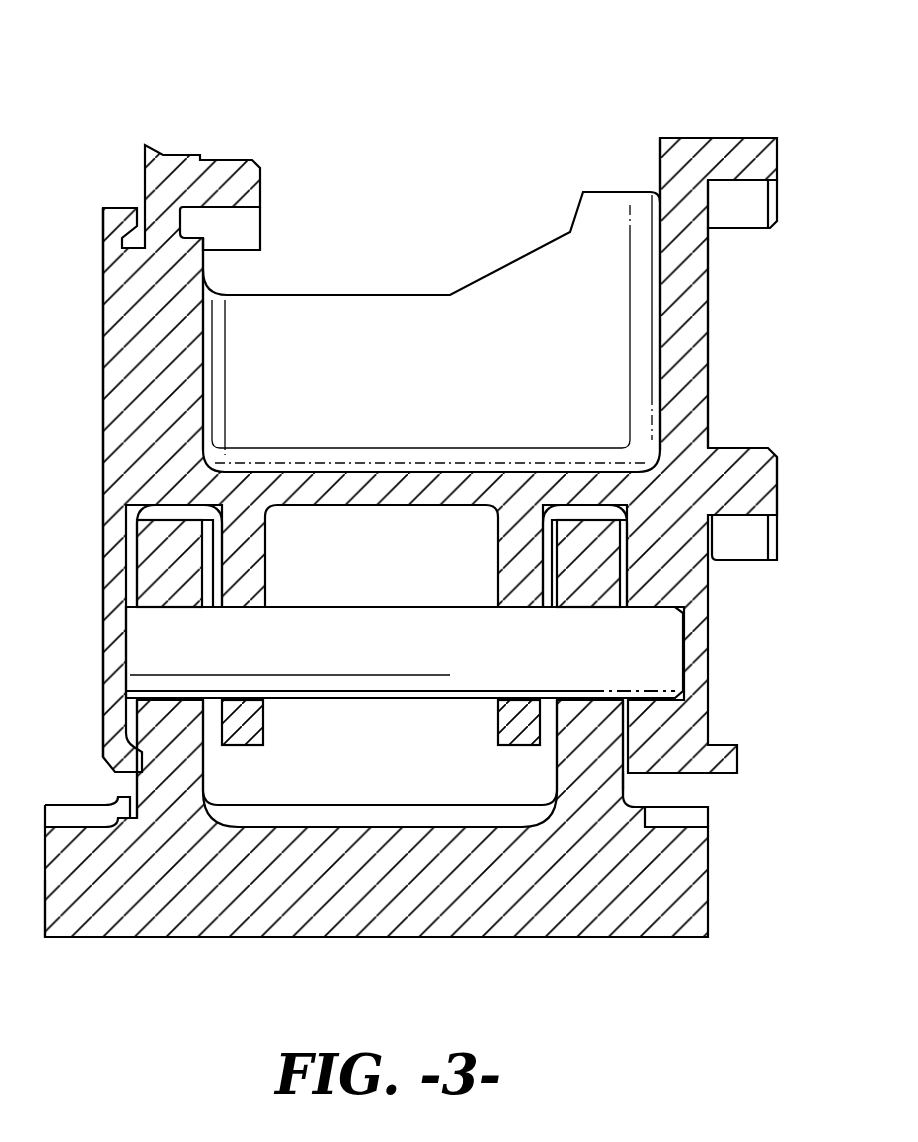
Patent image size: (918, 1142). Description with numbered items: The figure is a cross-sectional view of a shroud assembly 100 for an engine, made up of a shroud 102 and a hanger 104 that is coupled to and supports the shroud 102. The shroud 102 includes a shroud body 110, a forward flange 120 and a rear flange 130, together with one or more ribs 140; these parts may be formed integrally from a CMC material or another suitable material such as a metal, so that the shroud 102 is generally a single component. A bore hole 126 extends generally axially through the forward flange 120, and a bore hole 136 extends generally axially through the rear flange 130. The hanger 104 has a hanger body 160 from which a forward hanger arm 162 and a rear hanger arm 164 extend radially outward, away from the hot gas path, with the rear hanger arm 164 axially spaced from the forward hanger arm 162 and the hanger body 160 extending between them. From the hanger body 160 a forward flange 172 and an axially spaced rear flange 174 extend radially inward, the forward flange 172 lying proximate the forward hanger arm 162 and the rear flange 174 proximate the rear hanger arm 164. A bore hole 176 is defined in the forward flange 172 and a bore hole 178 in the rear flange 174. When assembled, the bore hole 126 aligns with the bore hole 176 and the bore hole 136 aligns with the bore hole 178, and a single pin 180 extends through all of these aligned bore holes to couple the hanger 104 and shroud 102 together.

The shroud assembly 100 is at (100, 80).
The shroud 102 is at (152, 949).
The hanger 104 is at (80, 415).
The shroud body 110 is at (367, 878).
The forward flange 120 is at (161, 773).
The bore hole 126 is at (163, 705).
The rear flange 130 is at (602, 768).
The bore hole 136 is at (600, 702).
The rib 140 is at (478, 822).
The hanger body 160 is at (330, 494).
The forward hanger arm 162 is at (133, 332).
The rear hanger arm 164 is at (682, 334).
The forward flange 172 is at (238, 546).
The rear flange 174 is at (516, 528).
The bore hole 176 is at (270, 703).
The bore hole 178 is at (488, 703).
The pin 180 is at (654, 654).